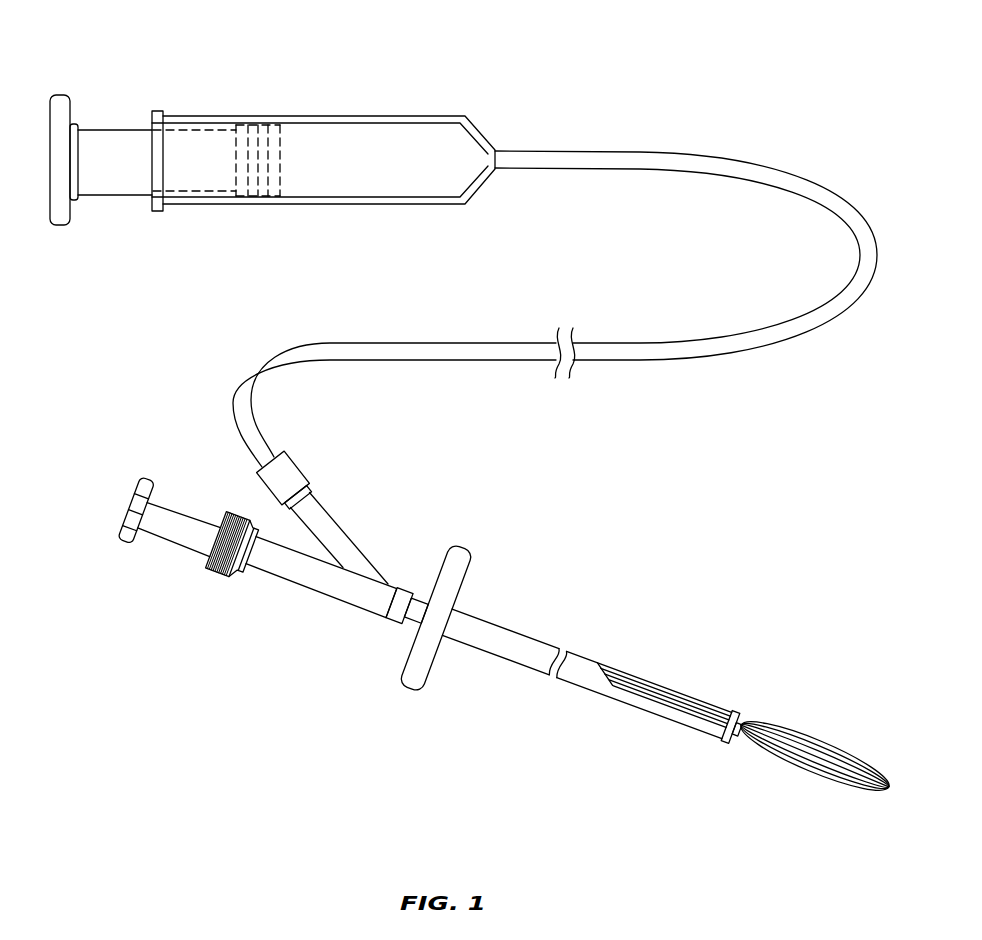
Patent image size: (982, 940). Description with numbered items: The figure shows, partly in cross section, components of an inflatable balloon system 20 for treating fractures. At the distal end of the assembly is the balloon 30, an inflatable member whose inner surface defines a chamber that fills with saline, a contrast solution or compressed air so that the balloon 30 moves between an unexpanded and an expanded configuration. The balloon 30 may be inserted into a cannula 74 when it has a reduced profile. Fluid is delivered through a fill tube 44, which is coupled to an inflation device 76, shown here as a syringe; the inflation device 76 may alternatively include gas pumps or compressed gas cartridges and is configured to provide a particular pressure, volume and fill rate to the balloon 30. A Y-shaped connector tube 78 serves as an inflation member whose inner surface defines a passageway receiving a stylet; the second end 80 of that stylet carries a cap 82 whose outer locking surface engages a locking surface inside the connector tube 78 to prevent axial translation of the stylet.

The inflatable balloon system 20 is at (789, 496).
The balloon 30 is at (811, 722).
The fill tube 44 is at (398, 362).
The cannula 74 is at (590, 653).
The inflation device 76 is at (408, 94).
The Y-shaped connector tube 78 is at (306, 603).
The second end 80 is at (192, 513).
The cap 82 is at (121, 544).